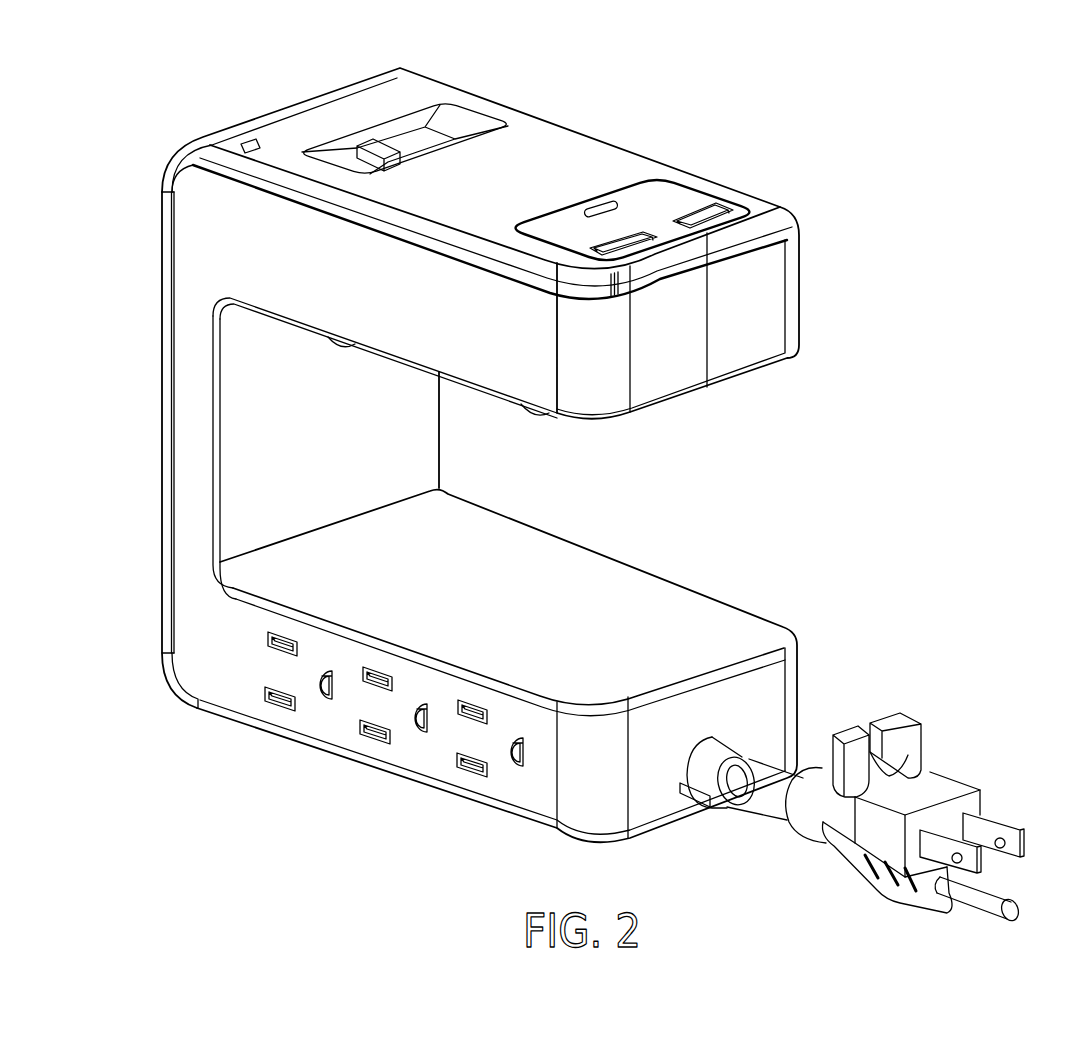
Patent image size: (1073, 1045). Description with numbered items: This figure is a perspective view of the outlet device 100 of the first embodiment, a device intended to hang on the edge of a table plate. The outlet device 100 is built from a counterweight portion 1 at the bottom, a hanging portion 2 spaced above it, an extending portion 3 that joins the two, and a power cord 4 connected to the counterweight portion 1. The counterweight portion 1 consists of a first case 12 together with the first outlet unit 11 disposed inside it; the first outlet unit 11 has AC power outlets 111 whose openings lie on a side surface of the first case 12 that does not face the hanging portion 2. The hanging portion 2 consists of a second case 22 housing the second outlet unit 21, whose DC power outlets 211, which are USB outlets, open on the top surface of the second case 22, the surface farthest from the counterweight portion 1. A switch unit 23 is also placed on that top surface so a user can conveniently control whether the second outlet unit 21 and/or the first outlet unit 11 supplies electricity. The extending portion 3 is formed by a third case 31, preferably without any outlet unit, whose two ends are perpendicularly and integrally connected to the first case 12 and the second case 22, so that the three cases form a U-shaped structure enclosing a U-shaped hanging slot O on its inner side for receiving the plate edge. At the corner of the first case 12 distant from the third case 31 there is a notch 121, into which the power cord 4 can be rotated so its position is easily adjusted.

The outlet device 100 is at (1019, 58).
The counterweight portion 1 is at (709, 588).
The first outlet unit 11 is at (265, 800).
The AC power outlet 111 is at (283, 698).
The first case 12 is at (514, 790).
The notch 121 is at (702, 822).
The hanging portion 2 is at (812, 279).
The second outlet unit 21 is at (742, 139).
The DC power outlet 211 is at (601, 203).
The second case 22 is at (548, 138).
The switch unit 23 is at (403, 146).
The extending portion 3 is at (150, 470).
The third case 31 is at (190, 395).
The power cord 4 is at (949, 766).
The U-shaped hanging slot O is at (762, 487).